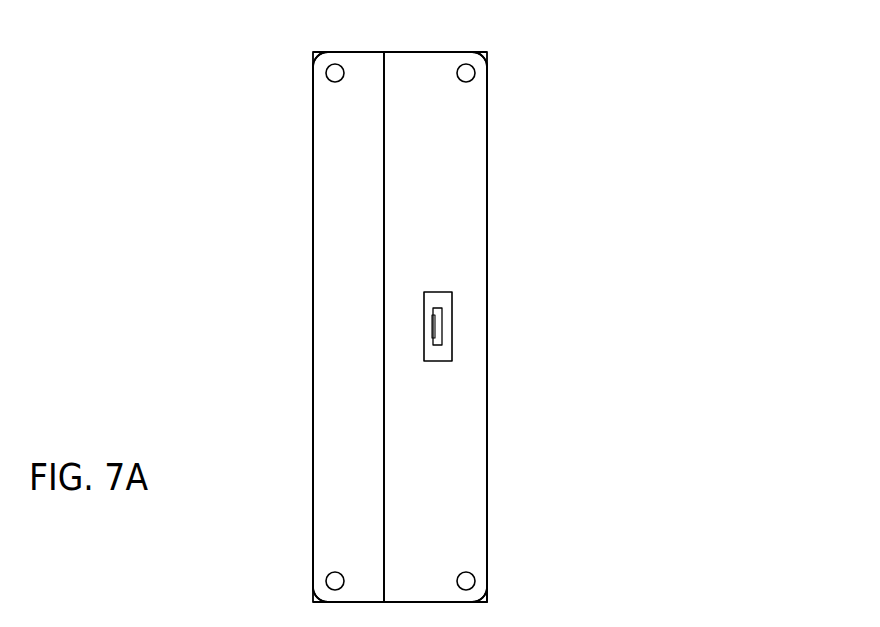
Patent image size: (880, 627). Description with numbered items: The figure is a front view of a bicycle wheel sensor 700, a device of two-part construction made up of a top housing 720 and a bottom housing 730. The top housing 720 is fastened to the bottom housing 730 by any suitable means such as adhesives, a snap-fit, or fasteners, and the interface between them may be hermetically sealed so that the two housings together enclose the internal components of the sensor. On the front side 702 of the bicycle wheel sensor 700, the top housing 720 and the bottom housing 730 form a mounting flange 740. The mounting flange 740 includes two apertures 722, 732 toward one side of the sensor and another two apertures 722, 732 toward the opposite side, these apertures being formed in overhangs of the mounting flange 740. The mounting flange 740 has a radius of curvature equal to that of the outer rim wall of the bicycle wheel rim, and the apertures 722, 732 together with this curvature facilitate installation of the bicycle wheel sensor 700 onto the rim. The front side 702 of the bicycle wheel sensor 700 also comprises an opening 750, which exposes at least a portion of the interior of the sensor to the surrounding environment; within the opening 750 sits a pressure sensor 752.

The bicycle wheel sensor 700 is at (621, 83).
The front side 702 is at (468, 190).
The top housing 720 is at (333, 361).
The aperture 722 is at (326, 73).
The bottom housing 730 is at (468, 431).
The aperture 732 is at (475, 73).
The mounting flange 740 is at (468, 490).
The opening 750 is at (458, 303).
The pressure sensor 752 is at (437, 327).